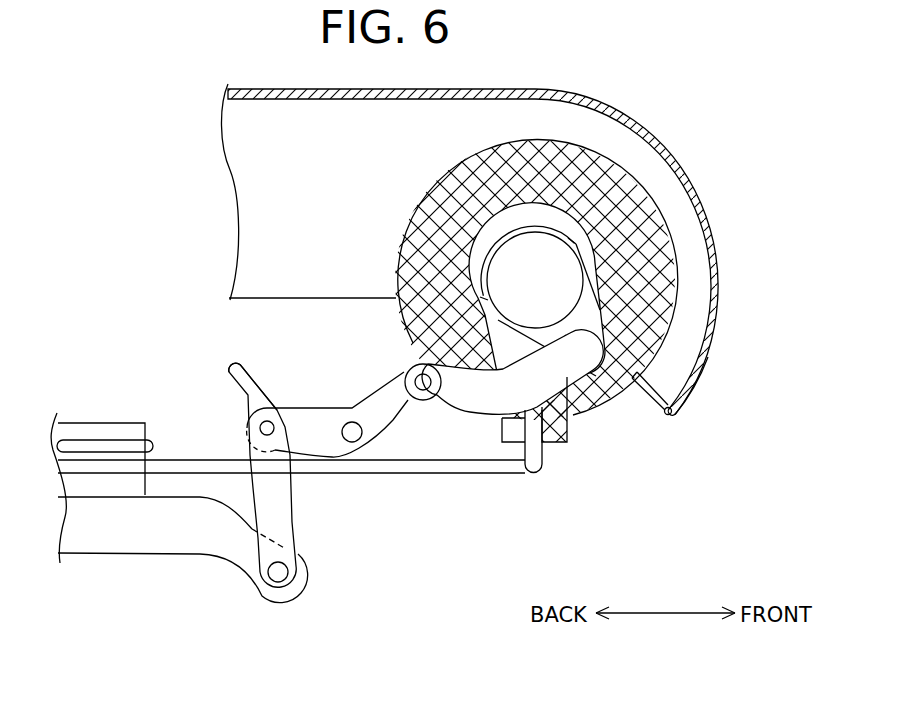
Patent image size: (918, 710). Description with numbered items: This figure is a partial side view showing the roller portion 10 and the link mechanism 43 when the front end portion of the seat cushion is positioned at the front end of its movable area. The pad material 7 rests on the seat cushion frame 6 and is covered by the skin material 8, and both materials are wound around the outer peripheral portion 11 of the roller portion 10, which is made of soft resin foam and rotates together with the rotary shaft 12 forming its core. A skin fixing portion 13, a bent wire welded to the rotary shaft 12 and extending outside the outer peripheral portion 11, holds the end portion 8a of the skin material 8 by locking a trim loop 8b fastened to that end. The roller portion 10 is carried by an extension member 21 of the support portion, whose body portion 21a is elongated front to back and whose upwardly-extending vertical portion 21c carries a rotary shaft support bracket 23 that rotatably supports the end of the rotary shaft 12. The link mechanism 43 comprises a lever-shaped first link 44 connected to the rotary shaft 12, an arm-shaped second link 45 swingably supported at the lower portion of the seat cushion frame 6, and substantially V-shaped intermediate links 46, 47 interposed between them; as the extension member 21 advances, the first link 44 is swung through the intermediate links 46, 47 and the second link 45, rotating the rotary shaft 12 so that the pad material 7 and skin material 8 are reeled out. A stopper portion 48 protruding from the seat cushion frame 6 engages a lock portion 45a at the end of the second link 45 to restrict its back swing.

The seat cushion frame 6 is at (132, 540).
The pad material 7 is at (687, 236).
The skin material 8 is at (713, 217).
The end portion of the skin material 8a is at (697, 378).
The trim loop 8b is at (680, 405).
The roller portion 10 is at (625, 153).
The outer peripheral portion 11 is at (632, 193).
The rotary shaft 12 is at (563, 277).
The skin fixing portion 13 is at (650, 402).
The extension member 21 is at (527, 490).
The body portion 21a is at (440, 477).
The vertical portion 21c is at (541, 463).
The rotary shaft support bracket 23 is at (557, 430).
The link mechanism 43 is at (140, 328).
The first link 44 is at (585, 317).
The second link 45 is at (284, 513).
The lock portion 45a is at (227, 368).
The intermediate link 46 is at (465, 398).
The intermediate link 47 is at (312, 425).
The stopper portion 48 is at (82, 445).